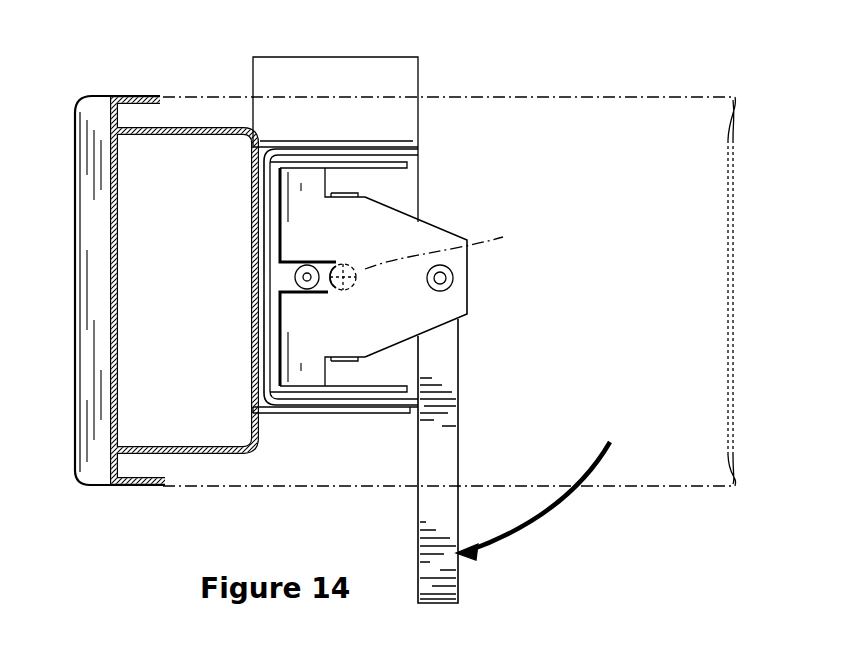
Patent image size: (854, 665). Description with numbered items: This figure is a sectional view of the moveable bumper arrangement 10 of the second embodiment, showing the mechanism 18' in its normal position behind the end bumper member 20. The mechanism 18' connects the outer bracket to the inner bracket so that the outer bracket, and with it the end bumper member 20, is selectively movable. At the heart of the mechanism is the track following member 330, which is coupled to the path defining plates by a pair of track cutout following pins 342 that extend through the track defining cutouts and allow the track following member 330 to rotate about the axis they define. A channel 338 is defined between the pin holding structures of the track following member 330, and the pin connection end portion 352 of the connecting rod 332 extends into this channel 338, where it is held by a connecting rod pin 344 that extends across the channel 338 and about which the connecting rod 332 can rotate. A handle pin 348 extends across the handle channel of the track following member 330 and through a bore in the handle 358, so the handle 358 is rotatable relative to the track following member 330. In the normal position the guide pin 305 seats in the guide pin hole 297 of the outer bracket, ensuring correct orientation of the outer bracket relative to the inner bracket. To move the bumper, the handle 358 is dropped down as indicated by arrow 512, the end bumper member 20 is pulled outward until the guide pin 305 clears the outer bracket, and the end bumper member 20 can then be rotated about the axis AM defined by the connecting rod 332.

The moveable bumper arrangement 10 is at (188, 79).
The end bumper member 20 is at (73, 340).
The mechanism 18' is at (335, 299).
The track cutout following pins 342 is at (313, 150).
The connecting rod 332 is at (326, 288).
The channel 338 is at (266, 290).
The guide pin 305 is at (296, 281).
The connecting rod pin 344 is at (353, 190).
The track following member 330 is at (358, 235).
The handle pin 348 is at (453, 268).
The pin connection end portion 352 is at (334, 265).
The guide pin hole 297 is at (296, 271).
The axis AM is at (446, 245).
The handle 358 is at (440, 455).
The arrow 512 is at (518, 542).